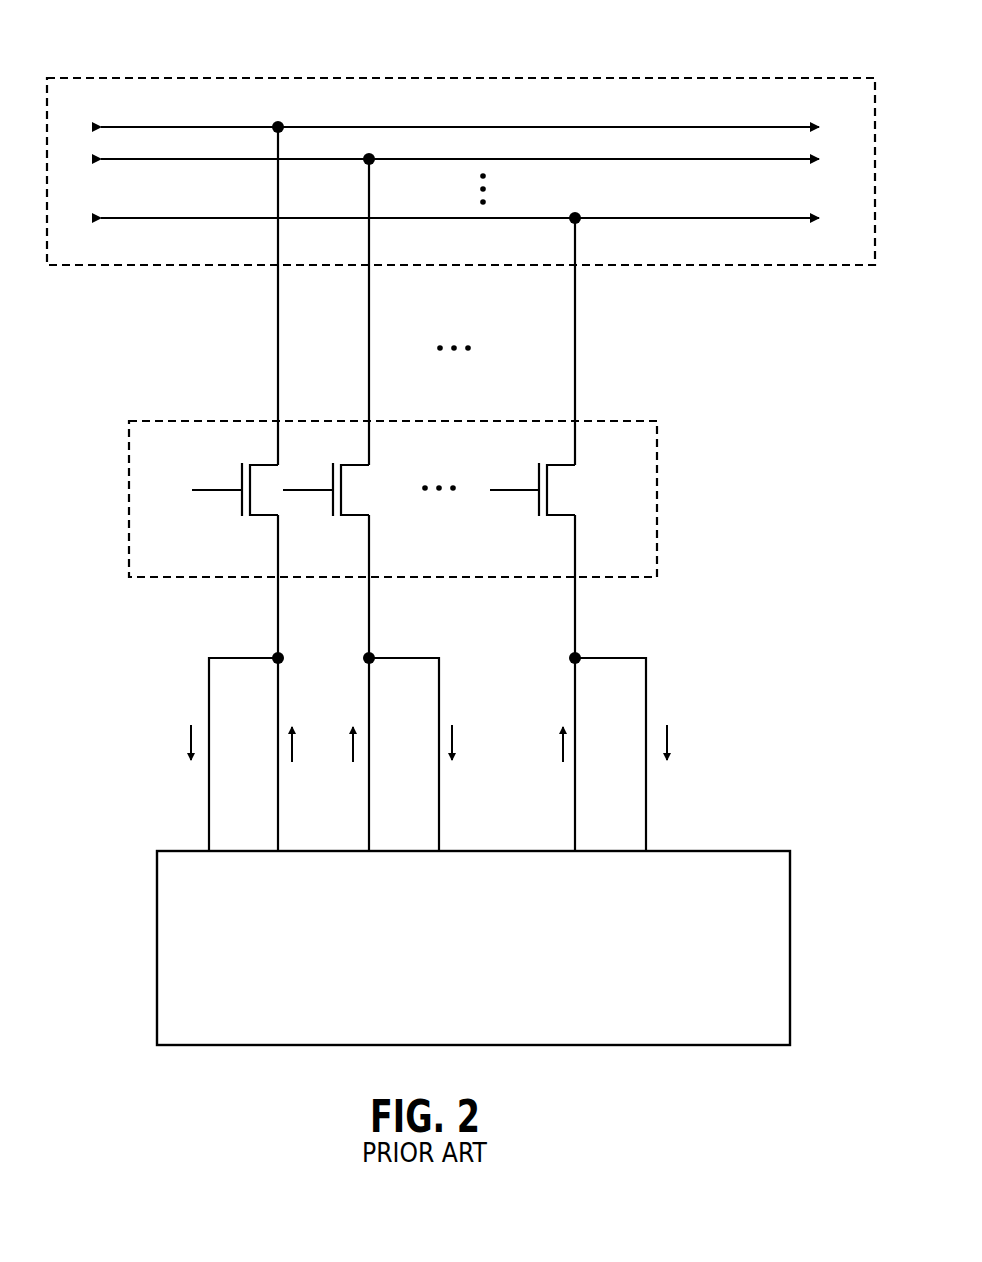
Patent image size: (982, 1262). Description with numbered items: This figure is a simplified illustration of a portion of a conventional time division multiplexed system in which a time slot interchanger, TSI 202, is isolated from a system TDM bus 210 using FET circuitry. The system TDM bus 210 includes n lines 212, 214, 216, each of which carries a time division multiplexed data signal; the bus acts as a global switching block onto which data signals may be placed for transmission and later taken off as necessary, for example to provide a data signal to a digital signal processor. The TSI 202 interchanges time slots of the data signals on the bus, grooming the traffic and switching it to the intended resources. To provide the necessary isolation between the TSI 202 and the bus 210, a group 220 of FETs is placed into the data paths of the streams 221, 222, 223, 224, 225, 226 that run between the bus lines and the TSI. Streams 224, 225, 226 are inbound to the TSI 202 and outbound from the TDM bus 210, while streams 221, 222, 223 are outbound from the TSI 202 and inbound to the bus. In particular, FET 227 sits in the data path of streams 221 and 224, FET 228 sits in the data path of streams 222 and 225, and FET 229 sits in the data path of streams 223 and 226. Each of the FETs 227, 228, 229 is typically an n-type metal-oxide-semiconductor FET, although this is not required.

The TSI 202 is at (790, 868).
The system TDM bus 210 is at (738, 76).
The line 212 is at (148, 126).
The line 214 is at (203, 161).
The line 216 is at (542, 216).
The group of FETs 220 is at (206, 421).
The stream 221 is at (280, 802).
The stream 222 is at (369, 677).
The stream 223 is at (575, 700).
The stream 224 is at (209, 683).
The stream 225 is at (439, 664).
The stream 226 is at (646, 677).
The FET 227 is at (255, 517).
The FET 228 is at (346, 517).
The FET 229 is at (560, 517).